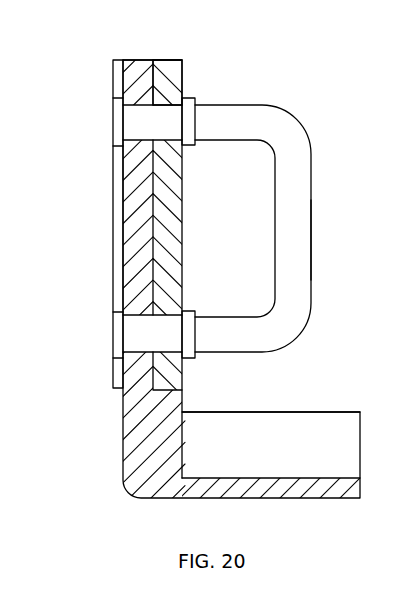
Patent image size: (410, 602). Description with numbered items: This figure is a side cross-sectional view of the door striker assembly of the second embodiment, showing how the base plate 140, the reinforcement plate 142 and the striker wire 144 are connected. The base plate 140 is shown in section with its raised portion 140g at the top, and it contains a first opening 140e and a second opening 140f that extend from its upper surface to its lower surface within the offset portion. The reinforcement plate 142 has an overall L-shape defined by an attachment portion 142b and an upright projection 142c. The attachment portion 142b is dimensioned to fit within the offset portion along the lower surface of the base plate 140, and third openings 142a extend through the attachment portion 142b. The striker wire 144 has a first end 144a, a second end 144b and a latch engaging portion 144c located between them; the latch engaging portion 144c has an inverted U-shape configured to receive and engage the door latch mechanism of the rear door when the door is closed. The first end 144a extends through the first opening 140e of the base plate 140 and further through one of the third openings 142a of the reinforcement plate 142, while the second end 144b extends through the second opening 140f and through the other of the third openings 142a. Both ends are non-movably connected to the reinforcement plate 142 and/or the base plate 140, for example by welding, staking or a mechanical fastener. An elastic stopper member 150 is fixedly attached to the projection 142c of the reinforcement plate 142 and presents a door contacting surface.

The base plate 140 is at (122, 203).
The first opening 140e is at (175, 352).
The second opening 140f is at (181, 140).
The raised portion 140g is at (168, 82).
The reinforcement plate 142 is at (122, 440).
The third openings 142a is at (137, 140).
The attachment portion 142b is at (138, 75).
The projection 142c is at (288, 490).
The striker wire 144 is at (316, 178).
The first end 144a is at (135, 116).
The second end 144b is at (164, 328).
The latch engaging portion 144c is at (292, 253).
The elastic stopper member 150 is at (303, 437).